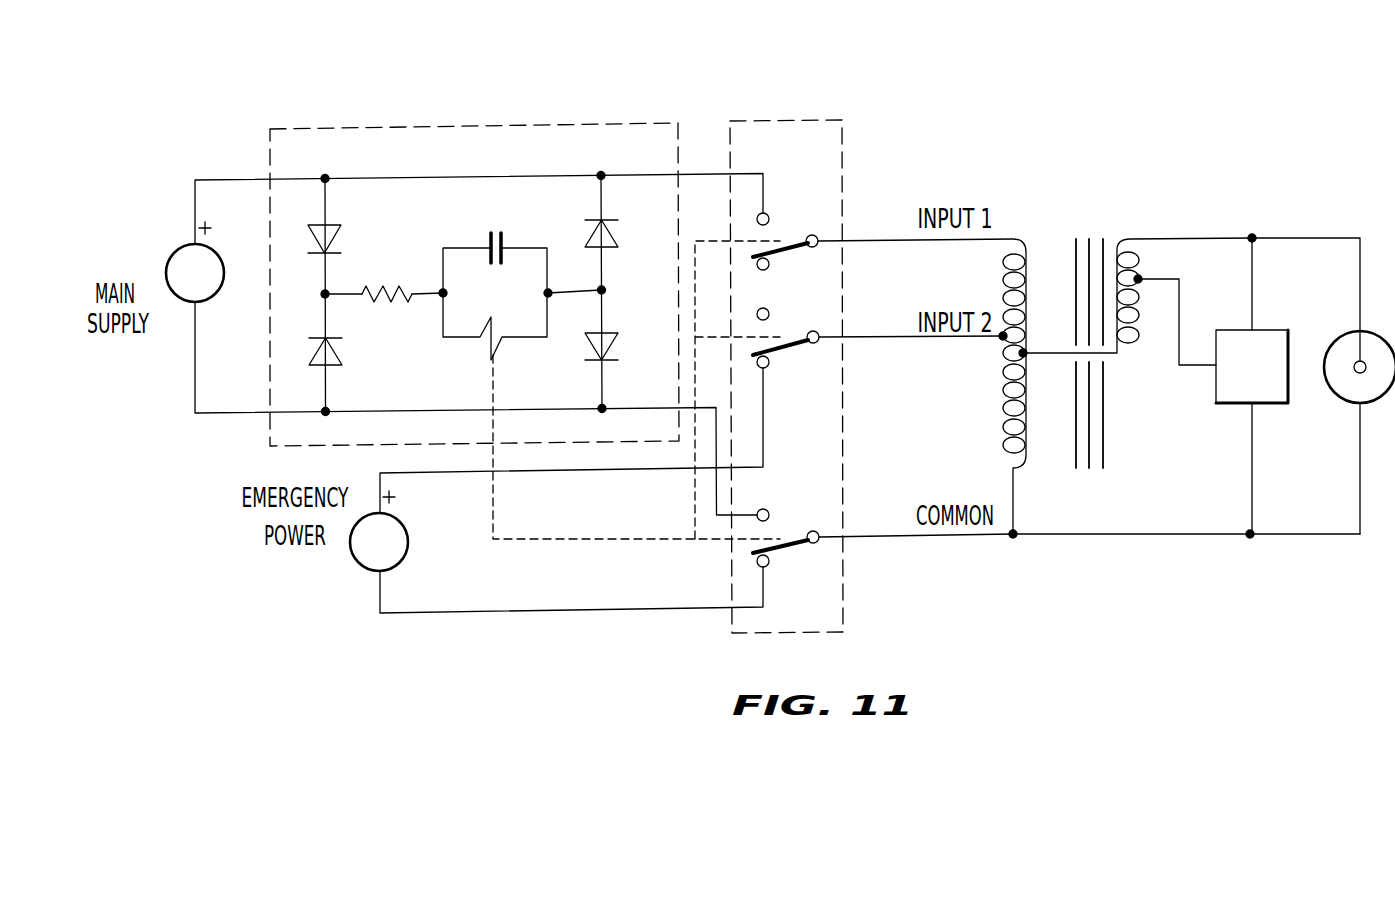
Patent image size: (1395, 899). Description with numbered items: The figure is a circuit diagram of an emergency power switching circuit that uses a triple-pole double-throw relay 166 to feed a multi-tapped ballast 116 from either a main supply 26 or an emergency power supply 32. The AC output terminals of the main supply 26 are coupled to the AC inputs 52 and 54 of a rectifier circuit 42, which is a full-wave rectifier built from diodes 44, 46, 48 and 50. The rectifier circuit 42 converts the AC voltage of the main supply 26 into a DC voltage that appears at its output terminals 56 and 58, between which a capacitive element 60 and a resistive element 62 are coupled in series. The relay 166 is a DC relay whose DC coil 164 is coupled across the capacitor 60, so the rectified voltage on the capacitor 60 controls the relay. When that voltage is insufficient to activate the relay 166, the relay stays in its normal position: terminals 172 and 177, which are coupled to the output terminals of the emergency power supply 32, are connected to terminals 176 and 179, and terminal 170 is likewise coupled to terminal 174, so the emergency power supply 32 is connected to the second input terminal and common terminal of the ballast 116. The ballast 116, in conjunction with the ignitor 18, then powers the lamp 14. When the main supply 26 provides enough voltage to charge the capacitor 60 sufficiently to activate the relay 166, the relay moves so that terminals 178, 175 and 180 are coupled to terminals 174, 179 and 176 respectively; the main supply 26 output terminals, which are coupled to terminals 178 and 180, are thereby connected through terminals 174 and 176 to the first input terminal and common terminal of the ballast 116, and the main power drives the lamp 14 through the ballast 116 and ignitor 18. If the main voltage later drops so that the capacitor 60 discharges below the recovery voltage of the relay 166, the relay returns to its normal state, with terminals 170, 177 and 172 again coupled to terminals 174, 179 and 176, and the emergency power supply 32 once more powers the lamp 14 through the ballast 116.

The high intensity discharge lamp 14 is at (1348, 338).
The ignitor 18 is at (1228, 401).
The main supply 26 is at (221, 291).
The emergency power supply 32 is at (366, 563).
The rectifier circuit 42 is at (585, 112).
The diode 44 is at (340, 231).
The diode 46 is at (342, 360).
The diode 48 is at (615, 236).
The diode 50 is at (615, 342).
The AC input 52 is at (327, 176).
The AC input 54 is at (322, 414).
The output terminal 56 is at (321, 292).
The output terminal 58 is at (606, 290).
The capacitive element 60 is at (503, 240).
The resistive element 62 is at (392, 285).
The DC coil 164 is at (497, 345).
The relay 166 is at (850, 163).
The terminal 170 is at (769, 268).
The terminal 172 is at (768, 567).
The terminal 174 is at (817, 236).
The terminal 175 is at (756, 313).
The terminal 176 is at (819, 532).
The terminal 177 is at (767, 368).
The terminal 178 is at (767, 212).
The terminal 179 is at (818, 343).
The terminal 180 is at (769, 510).
The multi-tapped ballast 116 is at (1071, 504).